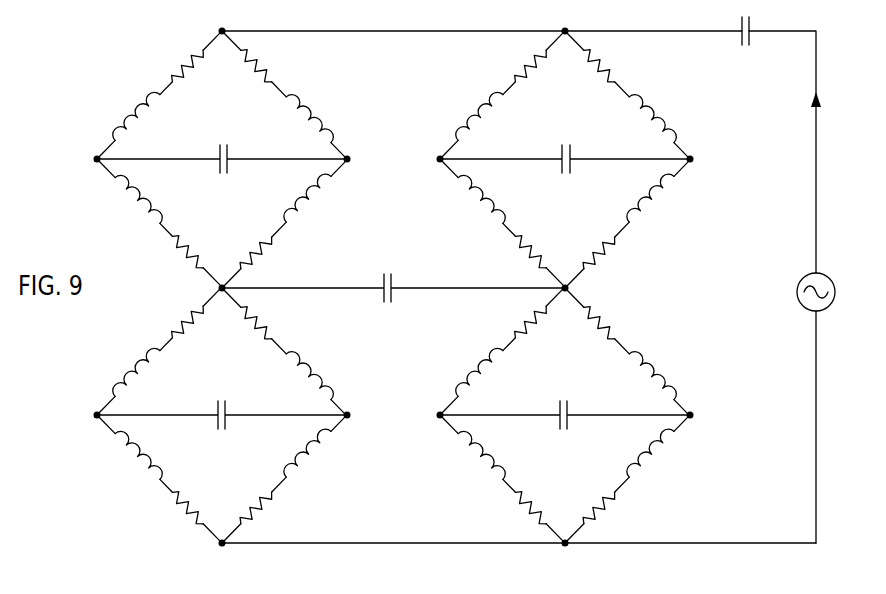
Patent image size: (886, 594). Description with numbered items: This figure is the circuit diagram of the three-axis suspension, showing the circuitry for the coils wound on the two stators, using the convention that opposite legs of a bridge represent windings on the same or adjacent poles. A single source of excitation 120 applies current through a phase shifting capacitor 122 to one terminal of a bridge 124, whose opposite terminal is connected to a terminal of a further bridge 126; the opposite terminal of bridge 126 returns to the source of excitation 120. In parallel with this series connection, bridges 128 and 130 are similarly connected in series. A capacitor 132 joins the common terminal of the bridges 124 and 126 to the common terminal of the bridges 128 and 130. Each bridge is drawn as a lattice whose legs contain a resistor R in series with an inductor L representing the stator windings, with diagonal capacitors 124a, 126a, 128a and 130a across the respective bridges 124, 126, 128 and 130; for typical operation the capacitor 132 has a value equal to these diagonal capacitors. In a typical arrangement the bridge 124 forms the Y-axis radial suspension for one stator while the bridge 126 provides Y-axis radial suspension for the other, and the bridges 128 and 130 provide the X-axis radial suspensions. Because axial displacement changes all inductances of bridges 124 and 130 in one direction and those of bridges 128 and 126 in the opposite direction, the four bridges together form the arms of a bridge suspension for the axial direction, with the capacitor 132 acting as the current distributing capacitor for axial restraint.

The source of excitation 120 is at (827, 272).
The phase shifting capacitor 122 is at (752, 25).
The bridge 124 is at (605, 108).
The diagonal capacitor 124a is at (573, 153).
The further bridge 126 is at (608, 353).
The diagonal capacitor 126a is at (573, 407).
The bridge 128 is at (268, 100).
The diagonal capacitor 128a is at (228, 152).
The bridge 130 is at (258, 360).
The diagonal capacitor 130a is at (228, 408).
The capacitor 132 is at (390, 272).
The resistor R is at (597, 60).
The inductor L is at (670, 127).